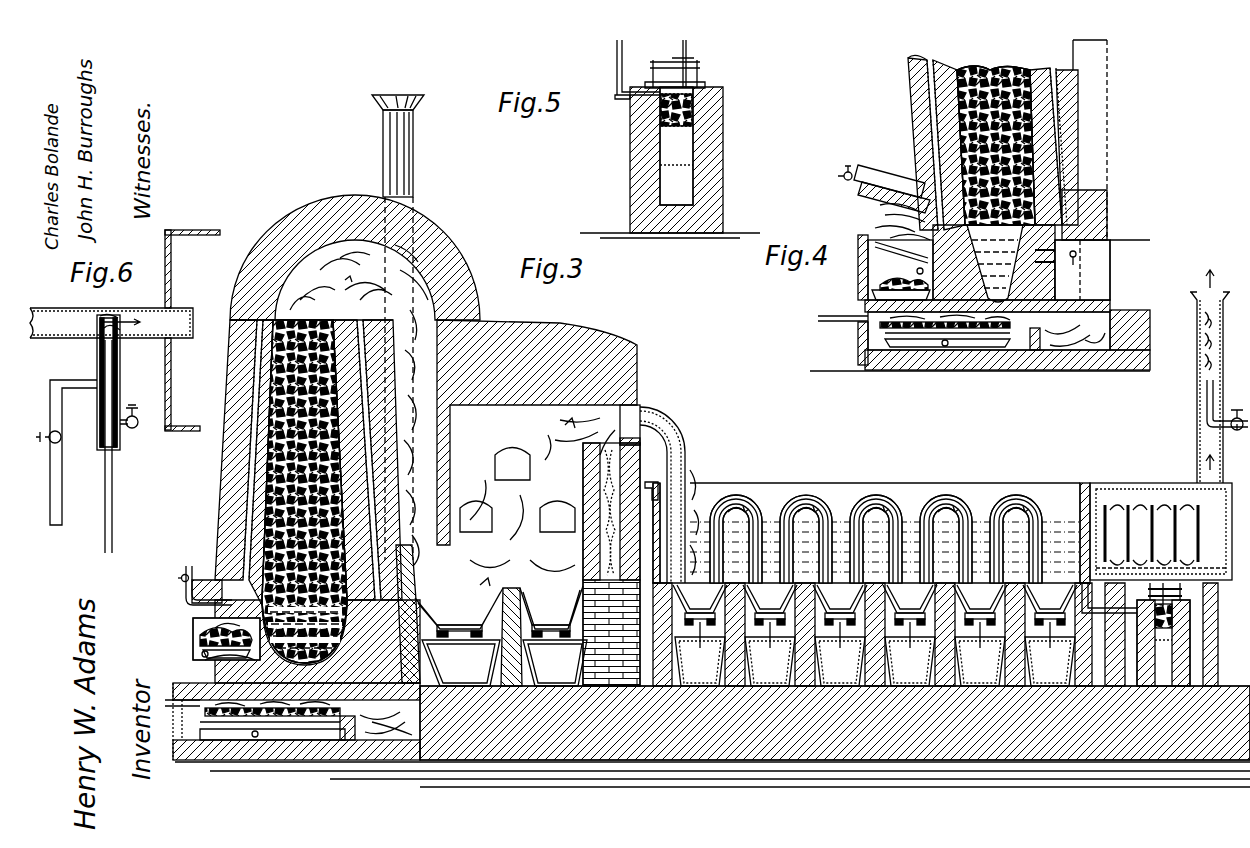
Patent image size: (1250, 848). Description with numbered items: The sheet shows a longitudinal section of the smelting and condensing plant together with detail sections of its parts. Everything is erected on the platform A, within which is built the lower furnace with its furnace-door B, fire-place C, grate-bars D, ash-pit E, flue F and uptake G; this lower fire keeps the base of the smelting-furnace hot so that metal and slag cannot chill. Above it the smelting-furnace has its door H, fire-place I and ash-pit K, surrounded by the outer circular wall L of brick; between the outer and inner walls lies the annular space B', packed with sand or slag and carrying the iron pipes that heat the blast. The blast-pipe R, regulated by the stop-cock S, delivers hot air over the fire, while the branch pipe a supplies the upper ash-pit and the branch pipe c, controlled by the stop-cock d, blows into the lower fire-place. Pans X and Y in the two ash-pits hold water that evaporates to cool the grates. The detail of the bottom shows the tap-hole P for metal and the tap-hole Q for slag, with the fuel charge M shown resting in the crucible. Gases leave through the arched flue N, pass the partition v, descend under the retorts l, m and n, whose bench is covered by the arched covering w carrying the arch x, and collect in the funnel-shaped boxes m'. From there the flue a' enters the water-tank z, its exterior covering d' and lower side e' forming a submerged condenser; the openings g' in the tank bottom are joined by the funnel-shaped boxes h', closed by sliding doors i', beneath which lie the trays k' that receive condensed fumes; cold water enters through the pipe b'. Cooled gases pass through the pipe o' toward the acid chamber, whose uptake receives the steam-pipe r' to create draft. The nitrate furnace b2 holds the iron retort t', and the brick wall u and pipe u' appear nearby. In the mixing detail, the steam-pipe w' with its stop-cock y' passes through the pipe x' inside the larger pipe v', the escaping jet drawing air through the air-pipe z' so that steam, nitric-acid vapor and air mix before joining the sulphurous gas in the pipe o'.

In FIG. 3, the platform A is at (835, 723).
In FIG. 3, the lower furnace-door B is at (316, 459).
In FIG. 4, the lower furnace-door B is at (853, 300).
In FIG. 4, the annular space B' is at (945, 133).
In FIG. 3, the fire-place C is at (268, 708).
In FIG. 4, the fire-place C is at (943, 319).
In FIG. 4, the grate-bars D is at (1068, 140).
In FIG. 3, the ash-pit E is at (270, 728).
In FIG. 4, the ash-pit E is at (947, 341).
In FIG. 3, the flue F is at (376, 725).
In FIG. 4, the flue F is at (1067, 335).
In FIG. 3, the uptake G is at (400, 327).
In FIG. 4, the door of the smelting-furnace H is at (855, 212).
In FIG. 4, the fire-place I is at (996, 145).
In FIG. 3, the ash-pit K is at (196, 632).
In FIG. 4, the ash-pit K is at (900, 270).
In FIG. 3, the outer circular wall L is at (228, 462).
In FIG. 4, the outer circular wall L is at (905, 128).
In FIG. 3, the fuel charge M is at (304, 491).
In FIG. 3, the arched flue N is at (359, 405).
In FIG. 4, the tap-hole P is at (1082, 270).
In FIG. 3, the tap-hole Q is at (317, 641).
In FIG. 4, the tap-hole Q is at (995, 263).
In FIG. 3, the blast-pipe R is at (199, 587).
In FIG. 3, the stop-cock S is at (178, 574).
In FIG. 4, the stop-cock S is at (848, 174).
In FIG. 3, the pan X is at (226, 652).
In FIG. 4, the pan X is at (901, 293).
In FIG. 3, the pan Y is at (272, 734).
In FIG. 3, the branch pipe a is at (186, 656).
In FIG. 4, the branch pipe a is at (914, 265).
In FIG. 3, the flue a' is at (871, 533).
In FIG. 3, the cold-water pipe b' is at (1161, 523).
In FIG. 5, the furnace b2 is at (670, 162).
In FIG. 3, the branch pipe c is at (651, 483).
In FIG. 4, the branch pipe c is at (837, 317).
In FIG. 3, the stop-cock d is at (176, 702).
In FIG. 3, the exterior covering of the flue d' is at (905, 487).
In FIG. 3, the lower side of the flue e' is at (876, 517).
In FIG. 3, the spaces through tank bottom g' is at (1219, 376).
In FIG. 3, the funnel-shaped boxes h' is at (935, 634).
In FIG. 6, the funnel-shaped boxes h' is at (192, 330).
In FIG. 3, the sliding door i' is at (504, 663).
In FIG. 3, the trays k' is at (875, 654).
In FIG. 3, the retort l is at (512, 464).
In FIG. 3, the retort m is at (476, 516).
In FIG. 3, the retort n is at (557, 516).
In FIG. 3, the funnel-shaped boxes m' is at (499, 611).
In FIG. 6, the pipe o' is at (111, 323).
In FIG. 3, the steam-pipe r' is at (1227, 405).
In FIG. 3, the iron retort t' is at (1163, 634).
In FIG. 5, the iron retort t' is at (675, 83).
In FIG. 3, the brick wall u is at (611, 564).
In FIG. 3, the pipe u' is at (1109, 607).
In FIG. 5, the pipe u' is at (630, 69).
In FIG. 3, the partition v is at (535, 502).
In FIG. 6, the pipe v' is at (118, 382).
In FIG. 3, the arched covering w is at (537, 432).
In FIG. 6, the steam-pipe w' is at (66, 452).
In FIG. 3, the arch x is at (355, 257).
In FIG. 6, the pipe x' is at (104, 446).
In FIG. 6, the stop-cock y' is at (56, 438).
In FIG. 3, the water-tank z is at (947, 488).
In FIG. 6, the air-pipe z' is at (137, 418).